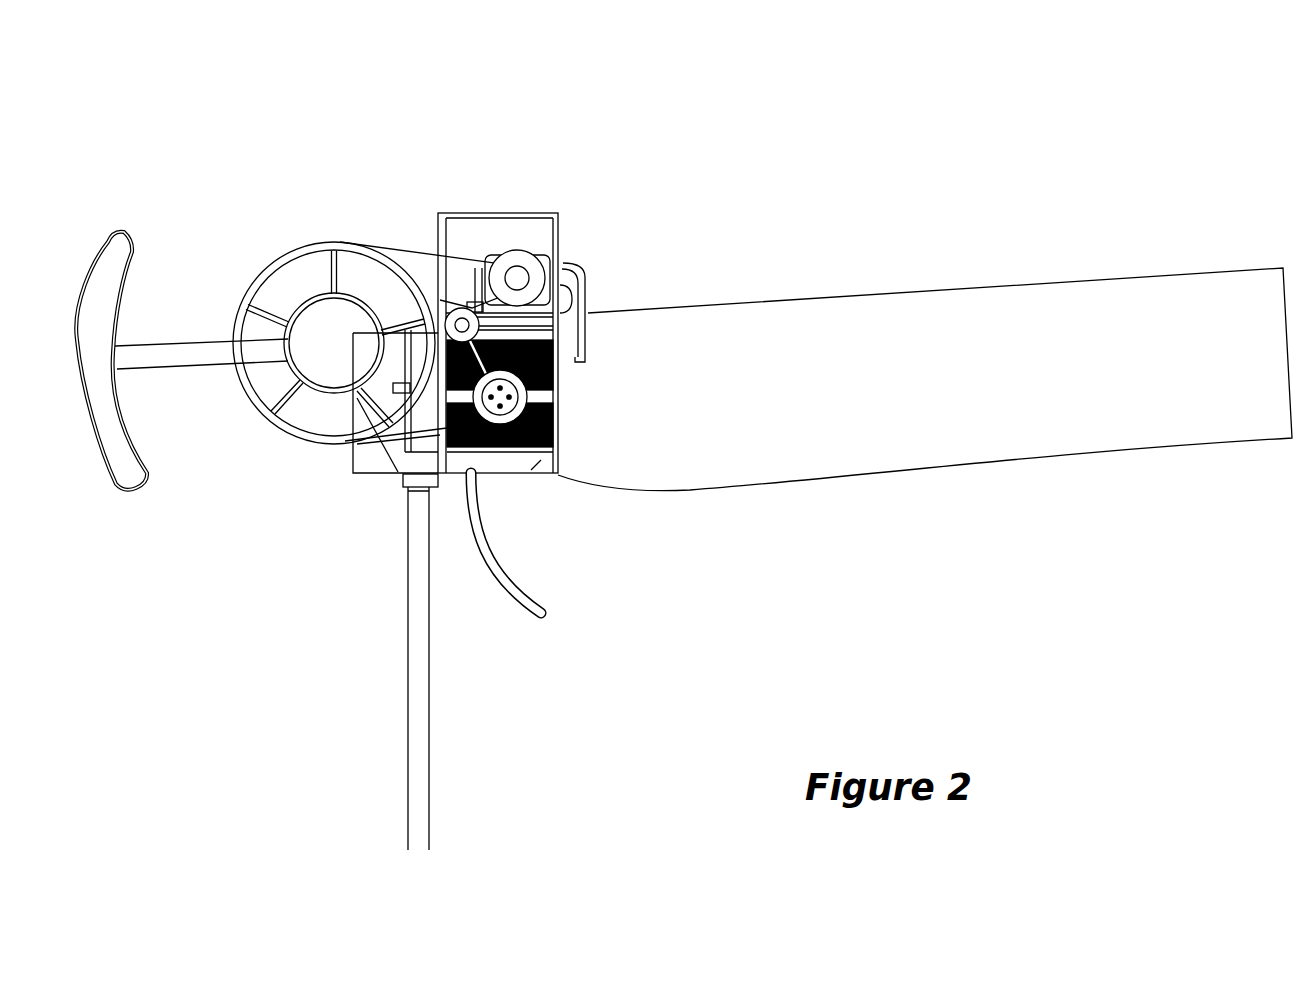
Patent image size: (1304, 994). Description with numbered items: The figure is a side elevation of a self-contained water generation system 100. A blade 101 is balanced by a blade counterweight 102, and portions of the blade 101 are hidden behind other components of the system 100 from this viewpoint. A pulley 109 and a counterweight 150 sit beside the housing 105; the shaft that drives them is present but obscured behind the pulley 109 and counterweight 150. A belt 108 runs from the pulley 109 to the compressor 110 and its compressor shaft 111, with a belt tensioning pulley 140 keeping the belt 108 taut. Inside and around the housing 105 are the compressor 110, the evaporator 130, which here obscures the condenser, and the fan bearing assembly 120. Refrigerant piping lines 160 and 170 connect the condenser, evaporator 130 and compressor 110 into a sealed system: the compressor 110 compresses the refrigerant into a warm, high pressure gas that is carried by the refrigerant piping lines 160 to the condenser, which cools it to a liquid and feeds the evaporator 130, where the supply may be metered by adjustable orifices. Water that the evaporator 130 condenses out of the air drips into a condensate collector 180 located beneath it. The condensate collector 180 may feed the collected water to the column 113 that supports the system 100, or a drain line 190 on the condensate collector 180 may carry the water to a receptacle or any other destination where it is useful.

The system 100 is at (936, 141).
The blade 101 is at (816, 306).
The blade counterweight 102 is at (115, 231).
The housing 105 is at (474, 345).
The belt 108 is at (321, 356).
The pulley 109 is at (280, 430).
The compressor 110 is at (557, 241).
The compressor shaft 111 is at (528, 268).
The column 113 is at (408, 693).
The fan bearing assembly 120 is at (553, 393).
The evaporator 130 is at (570, 358).
The belt tensioning pulley 140 is at (457, 311).
The counterweight 150 is at (330, 396).
The refrigerant piping lines 160 is at (567, 280).
The refrigerant piping lines 170 is at (400, 449).
The condensate collector 180 is at (517, 474).
The drain line 190 is at (510, 594).